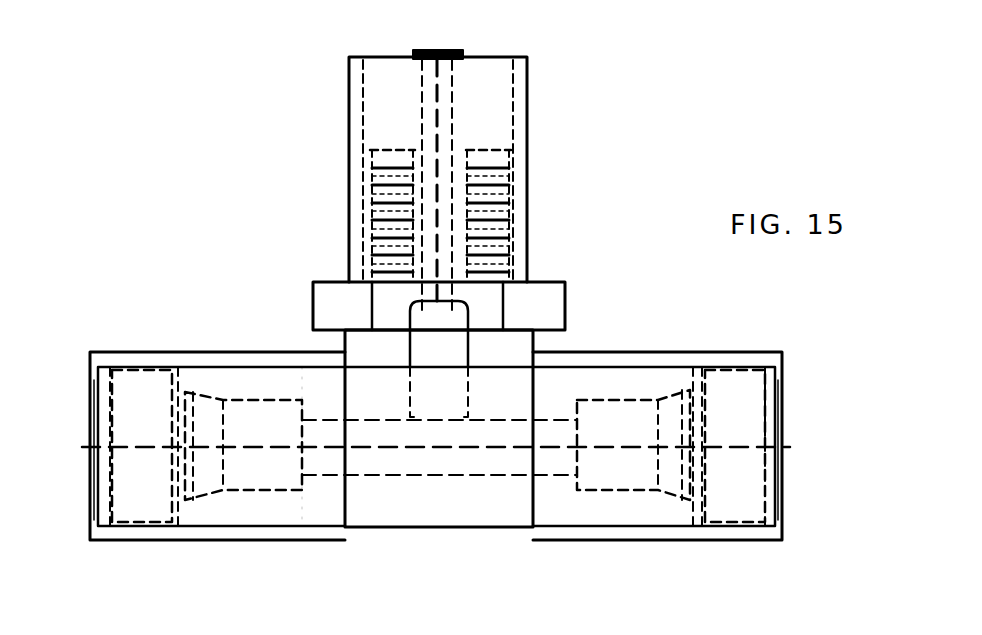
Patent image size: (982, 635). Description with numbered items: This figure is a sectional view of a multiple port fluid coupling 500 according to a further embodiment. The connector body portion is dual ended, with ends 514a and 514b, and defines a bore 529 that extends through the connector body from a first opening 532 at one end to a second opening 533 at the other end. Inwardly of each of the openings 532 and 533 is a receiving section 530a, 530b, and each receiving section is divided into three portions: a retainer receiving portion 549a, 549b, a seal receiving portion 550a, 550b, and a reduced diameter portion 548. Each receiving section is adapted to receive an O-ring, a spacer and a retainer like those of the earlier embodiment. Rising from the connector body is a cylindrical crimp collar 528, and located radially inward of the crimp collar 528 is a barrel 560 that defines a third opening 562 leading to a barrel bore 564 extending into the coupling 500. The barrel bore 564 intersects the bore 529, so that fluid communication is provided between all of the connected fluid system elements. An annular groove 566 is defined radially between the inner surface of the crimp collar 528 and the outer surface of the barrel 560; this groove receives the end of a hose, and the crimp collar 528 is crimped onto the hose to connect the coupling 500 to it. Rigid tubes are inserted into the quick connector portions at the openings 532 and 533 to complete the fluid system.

The coupling 500 is at (615, 130).
The first end of connector body portion 514a is at (138, 350).
The second end of connector body portion 514b is at (648, 352).
The crimp collar 528 is at (528, 203).
The bore 529 is at (437, 468).
The first receiving section 530a is at (127, 413).
The second receiving section 530b is at (737, 415).
The first opening 532 is at (95, 473).
The second opening 533 is at (785, 465).
The reduced diameter portion 548 is at (363, 468).
The first retainer receiving portion 549a is at (143, 503).
The second retainer receiving portion 549b is at (735, 497).
The first seal receiving portion 550a is at (272, 500).
The second seal receiving portion 550b is at (628, 475).
The barrel 560 is at (463, 80).
The third opening 562 is at (437, 50).
The barrel bore 564 is at (425, 123).
The annular groove 566 is at (393, 100).